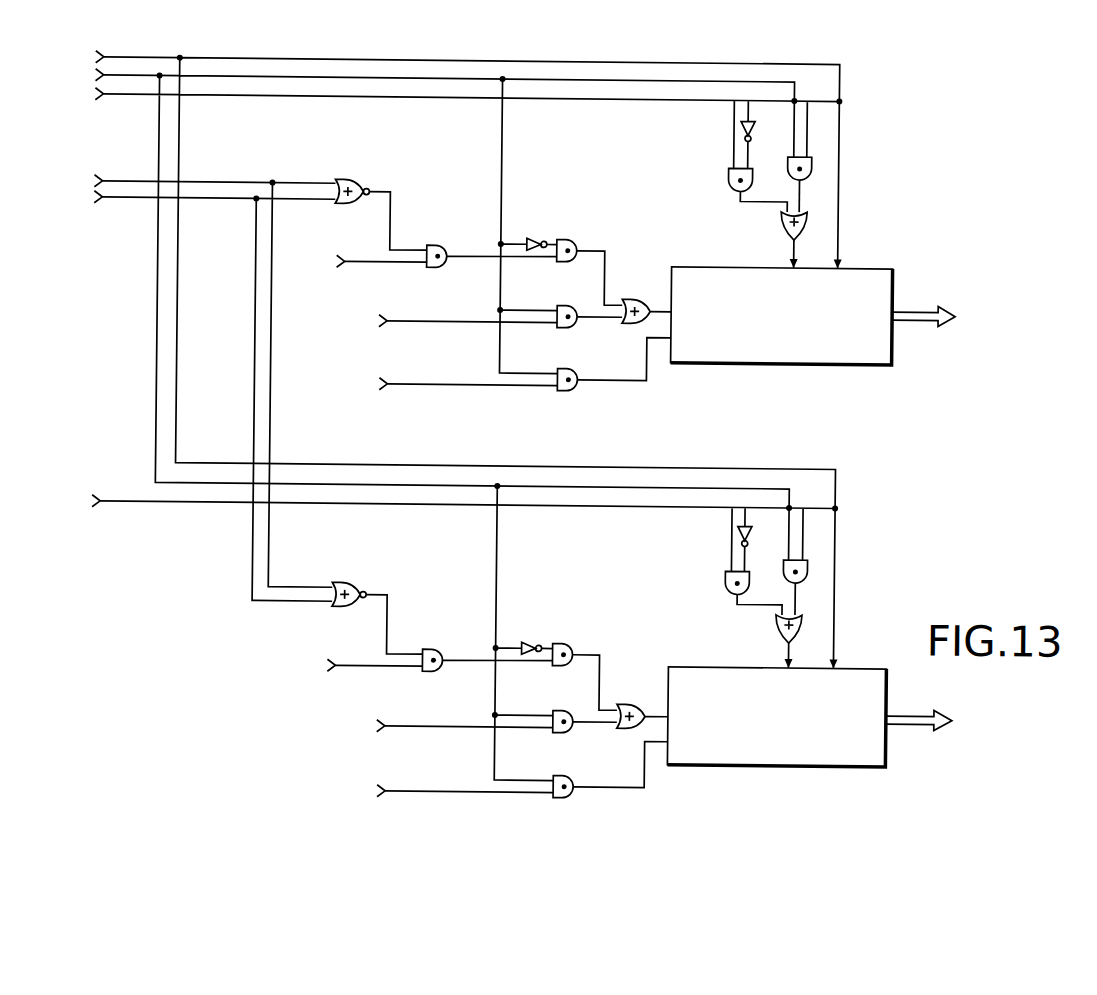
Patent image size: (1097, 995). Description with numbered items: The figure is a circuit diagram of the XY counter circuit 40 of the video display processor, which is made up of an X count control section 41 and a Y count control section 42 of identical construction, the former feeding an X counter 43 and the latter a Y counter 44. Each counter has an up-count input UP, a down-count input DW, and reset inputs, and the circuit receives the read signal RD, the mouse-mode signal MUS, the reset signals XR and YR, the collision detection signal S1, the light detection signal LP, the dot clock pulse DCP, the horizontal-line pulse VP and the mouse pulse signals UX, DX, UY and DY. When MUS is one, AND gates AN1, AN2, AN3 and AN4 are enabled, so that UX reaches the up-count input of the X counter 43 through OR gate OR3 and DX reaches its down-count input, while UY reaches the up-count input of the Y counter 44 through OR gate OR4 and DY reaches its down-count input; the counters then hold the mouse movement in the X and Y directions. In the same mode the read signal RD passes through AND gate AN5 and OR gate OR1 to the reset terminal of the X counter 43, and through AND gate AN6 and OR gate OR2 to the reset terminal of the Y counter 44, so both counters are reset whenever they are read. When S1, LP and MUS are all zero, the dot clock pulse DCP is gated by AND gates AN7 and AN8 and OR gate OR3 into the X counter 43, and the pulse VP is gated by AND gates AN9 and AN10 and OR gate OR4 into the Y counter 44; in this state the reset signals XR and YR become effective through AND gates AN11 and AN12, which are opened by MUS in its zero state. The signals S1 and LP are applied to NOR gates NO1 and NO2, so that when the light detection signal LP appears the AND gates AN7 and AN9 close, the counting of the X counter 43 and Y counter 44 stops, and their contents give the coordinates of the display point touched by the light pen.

The XY counter circuit 40 is at (430, 54).
The X count control section 41 is at (788, 183).
The Y count control section 42 is at (776, 588).
The X counter 43 is at (893, 265).
The Y counter 44 is at (866, 665).
The NOR gate NO1 is at (350, 182).
The NOR gate NO2 is at (342, 584).
The AND gate AN1 is at (561, 297).
The AND gate AN2 is at (574, 362).
The AND gate AN3 is at (556, 702).
The AND gate AN4 is at (570, 775).
The AND gate AN5 is at (809, 162).
The AND gate AN6 is at (809, 565).
The AND gate AN7 is at (431, 246).
The AND gate AN8 is at (571, 231).
The AND gate AN9 is at (427, 648).
The AND gate AN10 is at (561, 643).
The AND gate AN11 is at (726, 172).
The AND gate AN12 is at (727, 576).
The OR gate OR1 is at (778, 222).
The OR gate OR2 is at (777, 627).
The OR gate OR3 is at (626, 298).
The OR gate OR4 is at (624, 703).